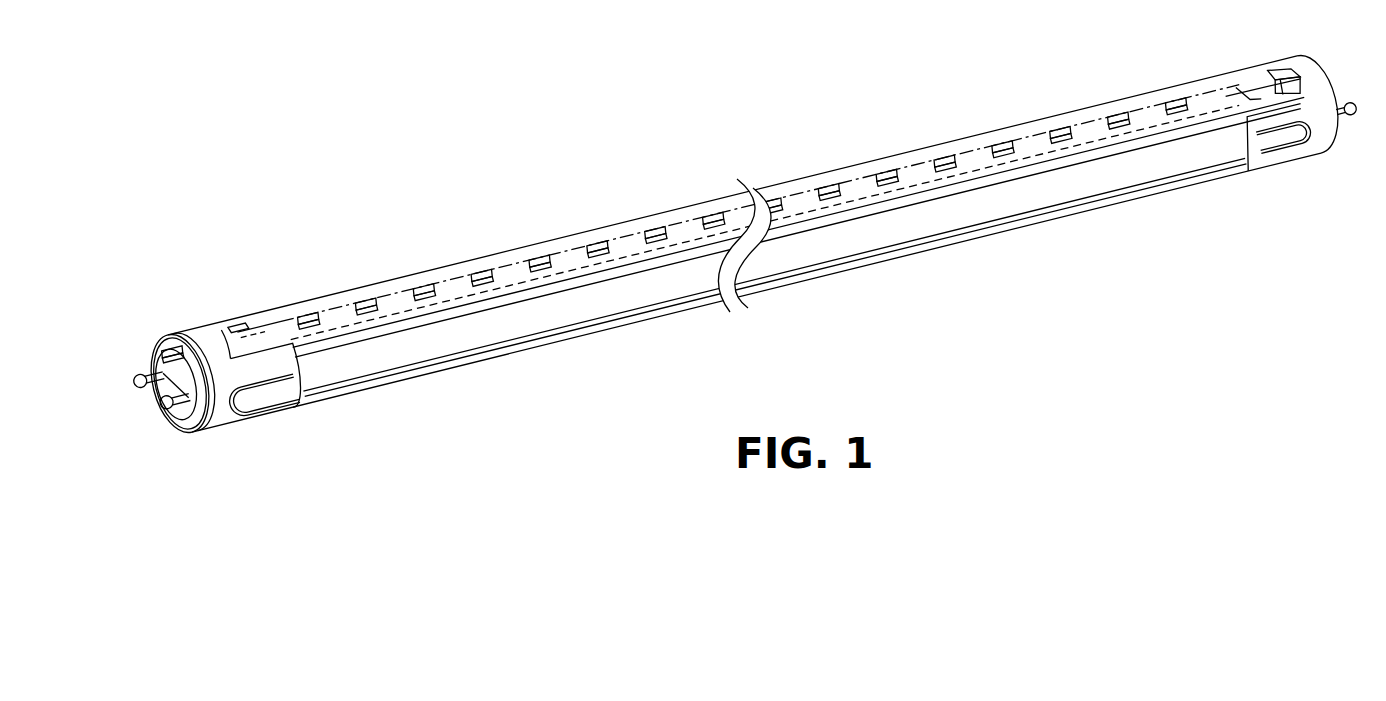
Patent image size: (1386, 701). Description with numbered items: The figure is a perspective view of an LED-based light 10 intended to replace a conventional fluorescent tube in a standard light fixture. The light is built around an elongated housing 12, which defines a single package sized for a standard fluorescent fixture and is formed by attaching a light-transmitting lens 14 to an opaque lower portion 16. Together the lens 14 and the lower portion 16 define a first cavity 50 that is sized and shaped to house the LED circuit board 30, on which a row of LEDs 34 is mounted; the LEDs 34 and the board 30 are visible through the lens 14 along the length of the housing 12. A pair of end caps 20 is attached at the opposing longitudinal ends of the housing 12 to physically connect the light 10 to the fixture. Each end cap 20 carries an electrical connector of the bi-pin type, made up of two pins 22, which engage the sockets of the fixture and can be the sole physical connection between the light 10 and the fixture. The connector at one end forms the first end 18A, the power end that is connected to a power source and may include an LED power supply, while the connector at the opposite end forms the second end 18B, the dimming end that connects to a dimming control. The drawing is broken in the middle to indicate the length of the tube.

The LED-based light 10 is at (745, 244).
The housing 12 is at (194, 380).
The lens 14 is at (732, 195).
The lower portion 16 is at (755, 286).
The first end 18A is at (160, 386).
The second end 18B is at (1289, 97).
The end cap 20 is at (778, 235).
The pin 22 is at (175, 400).
The LED circuit board 30 is at (767, 217).
The LEDs 34 is at (675, 230).
The first cavity 50 is at (656, 235).